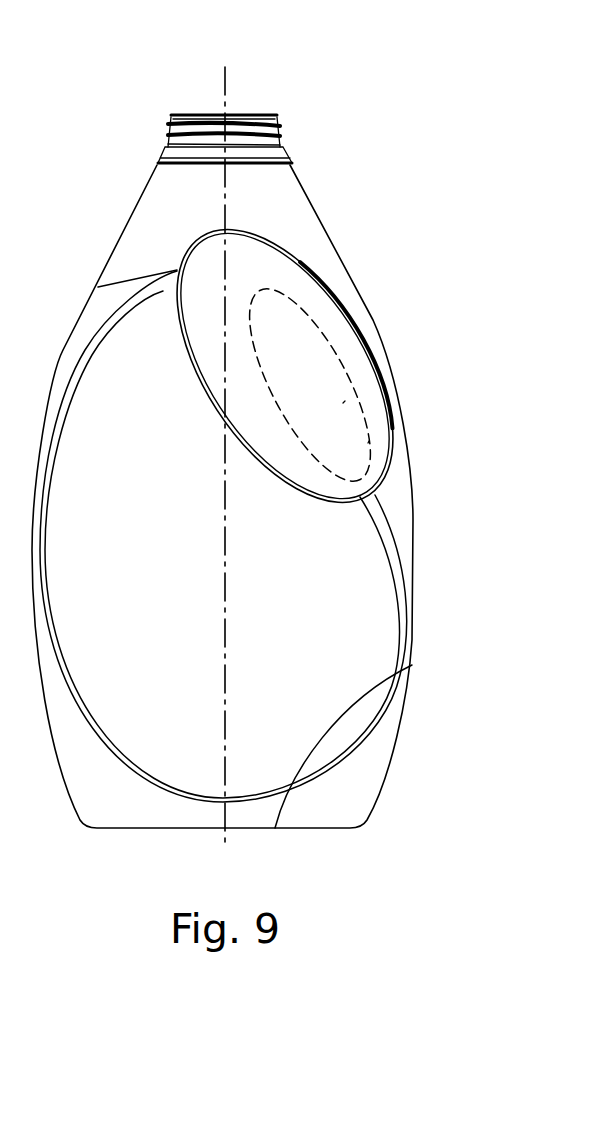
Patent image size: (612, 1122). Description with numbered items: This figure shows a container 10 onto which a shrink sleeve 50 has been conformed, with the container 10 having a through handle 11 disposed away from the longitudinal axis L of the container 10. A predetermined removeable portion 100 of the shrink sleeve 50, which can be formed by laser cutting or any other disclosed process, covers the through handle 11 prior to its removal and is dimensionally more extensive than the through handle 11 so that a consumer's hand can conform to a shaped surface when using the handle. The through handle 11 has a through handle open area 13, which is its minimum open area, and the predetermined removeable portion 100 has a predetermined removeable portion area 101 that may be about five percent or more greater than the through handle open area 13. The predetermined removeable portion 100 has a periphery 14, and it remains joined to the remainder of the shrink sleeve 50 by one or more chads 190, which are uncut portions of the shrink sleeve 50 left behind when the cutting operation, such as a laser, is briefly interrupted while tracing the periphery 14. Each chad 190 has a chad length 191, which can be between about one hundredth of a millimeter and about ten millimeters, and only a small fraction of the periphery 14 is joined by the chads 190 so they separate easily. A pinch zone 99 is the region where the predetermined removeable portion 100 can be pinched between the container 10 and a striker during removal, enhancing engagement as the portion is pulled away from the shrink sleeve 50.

The longitudinal axis L is at (228, 82).
The container 10 is at (348, 803).
The through handle 11 is at (368, 443).
The through handle open area 13 is at (343, 403).
The periphery 14 is at (340, 305).
The shrink sleeve 50 is at (333, 653).
The pinch zone 99 is at (213, 398).
The predetermined removeable portion 100 is at (302, 466).
The predetermined removeable portion area 101 is at (270, 263).
The chad 190 is at (303, 308).
The chad length 191 is at (303, 308).